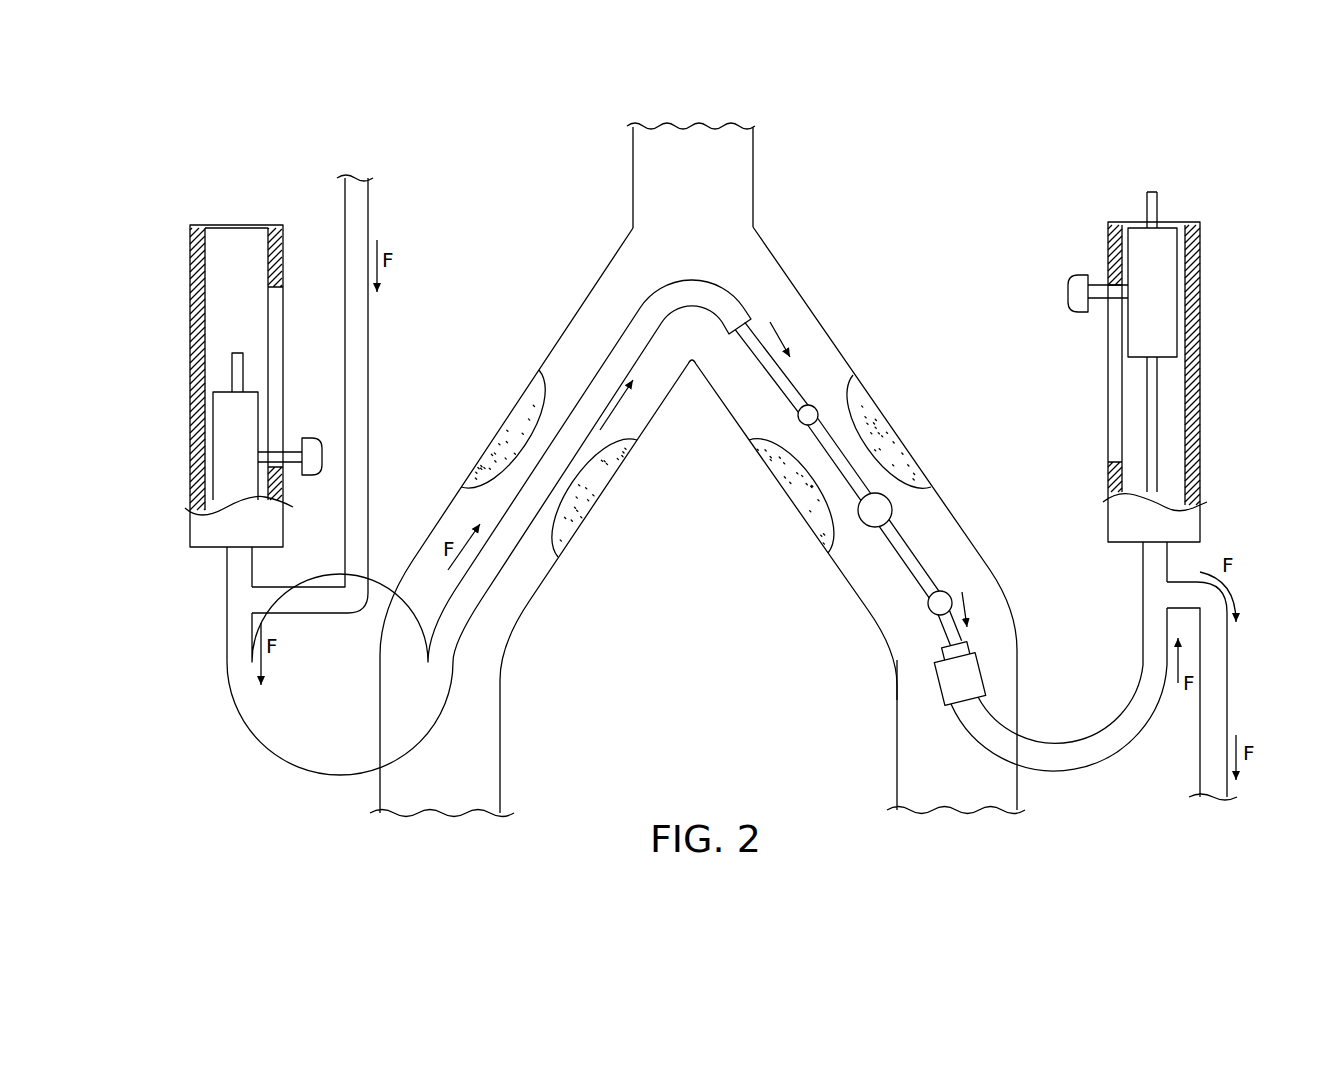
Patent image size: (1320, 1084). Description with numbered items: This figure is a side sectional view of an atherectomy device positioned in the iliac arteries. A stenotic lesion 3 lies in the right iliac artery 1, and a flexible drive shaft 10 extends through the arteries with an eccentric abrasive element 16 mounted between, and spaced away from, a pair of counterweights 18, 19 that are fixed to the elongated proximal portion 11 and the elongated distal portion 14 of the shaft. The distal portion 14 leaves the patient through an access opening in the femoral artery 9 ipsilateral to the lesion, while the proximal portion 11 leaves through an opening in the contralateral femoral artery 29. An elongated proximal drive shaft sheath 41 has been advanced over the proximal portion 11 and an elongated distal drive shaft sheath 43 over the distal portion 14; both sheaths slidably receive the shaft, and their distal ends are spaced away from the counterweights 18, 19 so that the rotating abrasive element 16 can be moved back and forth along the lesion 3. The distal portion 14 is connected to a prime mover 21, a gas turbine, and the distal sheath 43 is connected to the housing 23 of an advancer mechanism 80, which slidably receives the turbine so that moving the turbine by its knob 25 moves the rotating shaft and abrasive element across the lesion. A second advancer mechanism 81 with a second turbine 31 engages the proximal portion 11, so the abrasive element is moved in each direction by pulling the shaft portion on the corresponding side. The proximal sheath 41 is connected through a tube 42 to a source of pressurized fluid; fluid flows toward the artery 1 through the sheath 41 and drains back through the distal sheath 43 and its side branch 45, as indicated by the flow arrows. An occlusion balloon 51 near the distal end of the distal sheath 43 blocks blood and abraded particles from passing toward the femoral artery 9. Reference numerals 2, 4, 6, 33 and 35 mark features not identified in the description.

The right iliac artery 1 is at (798, 292).
The branch conduit 2 is at (582, 305).
The stenotic lesion 3 is at (862, 380).
The deposit in left branch 4 is at (535, 392).
The inlet pipe 6 is at (754, 148).
The femoral artery 9 is at (1017, 789).
The drive shaft 10 is at (1139, 200).
The elongated proximal portion of the drive shaft 11 is at (768, 372).
The elongated distal portion of the drive shaft 14 is at (1147, 385).
The eccentric abrasive element 16 is at (893, 506).
The counterweight 18 is at (817, 403).
The counterweight 19 is at (951, 594).
The prime mover 21 is at (1166, 223).
The housing 23 is at (1201, 485).
The knob 25 is at (1068, 287).
The femoral artery 29 is at (380, 797).
The second turbine 31 is at (259, 404).
The cylinder wall 33 is at (283, 256).
The handle 35 is at (314, 476).
The elongated proximal drive shaft sheath 41 is at (694, 281).
The tube 42 is at (368, 196).
The elongated distal drive shaft sheath 43 is at (1093, 735).
The side branch 45 is at (1227, 647).
The occlusion balloon 51 is at (984, 664).
The advancer mechanism 80 is at (1106, 420).
The second advancer mechanism 81 is at (186, 305).